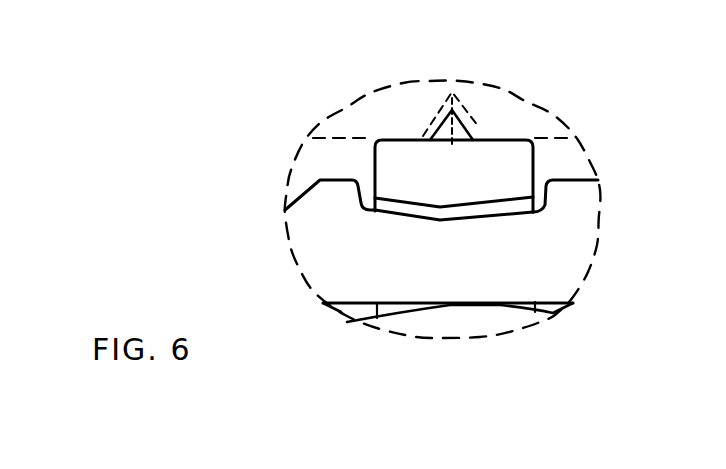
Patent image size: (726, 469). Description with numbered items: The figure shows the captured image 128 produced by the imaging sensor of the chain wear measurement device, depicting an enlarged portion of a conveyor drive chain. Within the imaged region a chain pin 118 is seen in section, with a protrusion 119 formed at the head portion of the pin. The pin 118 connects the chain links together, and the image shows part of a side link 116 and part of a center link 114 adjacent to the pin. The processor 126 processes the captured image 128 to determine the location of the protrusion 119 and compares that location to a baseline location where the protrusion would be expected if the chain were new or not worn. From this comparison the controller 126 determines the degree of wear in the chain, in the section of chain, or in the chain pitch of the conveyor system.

The processor 126 is at (298, 73).
The side link 116 is at (575, 225).
The captured image 128 is at (272, 222).
The chain pin 118 is at (505, 139).
The protrusion 119 is at (468, 124).
The center link 114 is at (442, 325).